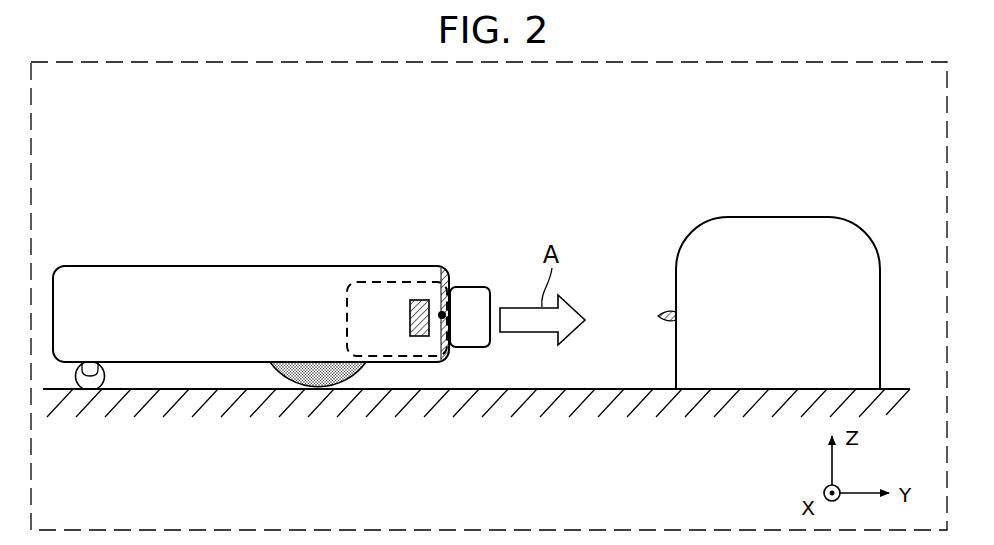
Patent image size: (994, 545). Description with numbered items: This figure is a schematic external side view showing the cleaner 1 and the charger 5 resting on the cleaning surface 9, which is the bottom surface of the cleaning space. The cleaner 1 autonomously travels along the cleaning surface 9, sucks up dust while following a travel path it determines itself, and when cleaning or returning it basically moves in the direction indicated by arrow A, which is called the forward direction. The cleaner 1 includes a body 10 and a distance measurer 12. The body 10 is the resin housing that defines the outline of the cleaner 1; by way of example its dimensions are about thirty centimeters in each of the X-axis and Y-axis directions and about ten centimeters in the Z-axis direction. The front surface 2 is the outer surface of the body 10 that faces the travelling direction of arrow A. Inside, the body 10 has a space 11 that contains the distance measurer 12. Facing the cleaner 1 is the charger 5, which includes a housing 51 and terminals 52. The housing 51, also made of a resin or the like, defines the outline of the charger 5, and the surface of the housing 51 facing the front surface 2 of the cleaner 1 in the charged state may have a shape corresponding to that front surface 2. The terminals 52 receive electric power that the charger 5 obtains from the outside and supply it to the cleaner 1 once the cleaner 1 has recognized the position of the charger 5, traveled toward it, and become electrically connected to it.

The cleaner 1 is at (379, 174).
The body 10 is at (203, 283).
The front surface 2 is at (452, 274).
The space 11 is at (421, 357).
The distance measurer 12 is at (475, 297).
The charger 5 is at (874, 144).
The housing 51 is at (783, 245).
The terminals 52 is at (658, 315).
The cleaning surface 9 is at (895, 387).